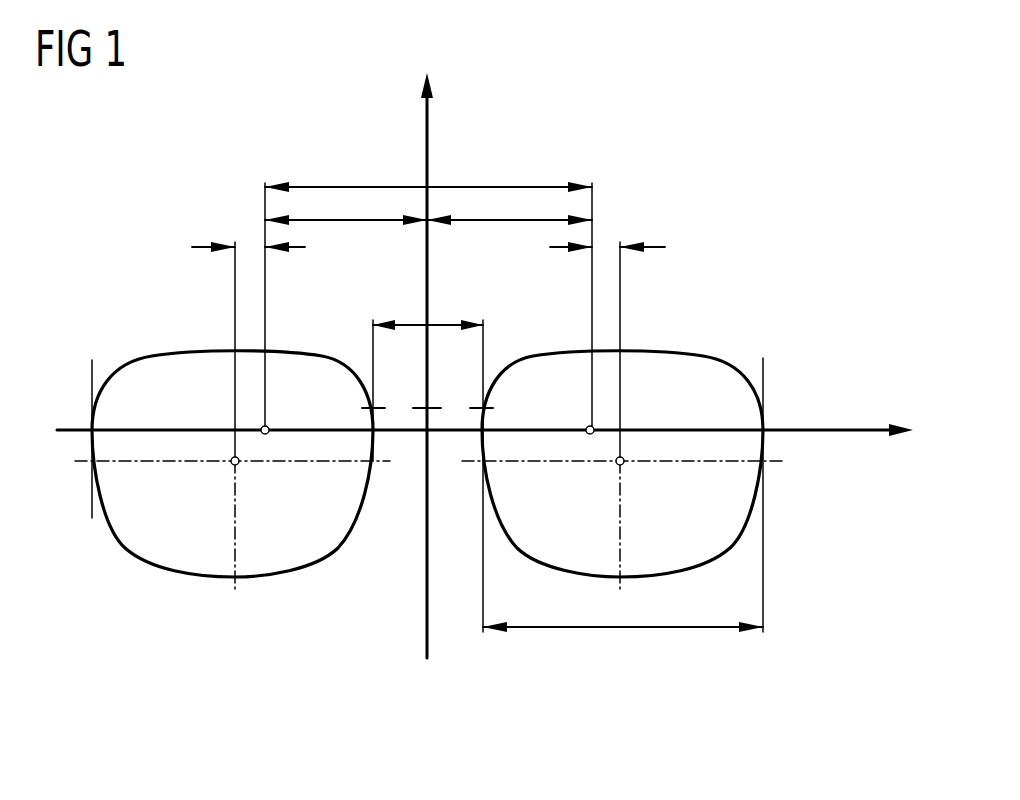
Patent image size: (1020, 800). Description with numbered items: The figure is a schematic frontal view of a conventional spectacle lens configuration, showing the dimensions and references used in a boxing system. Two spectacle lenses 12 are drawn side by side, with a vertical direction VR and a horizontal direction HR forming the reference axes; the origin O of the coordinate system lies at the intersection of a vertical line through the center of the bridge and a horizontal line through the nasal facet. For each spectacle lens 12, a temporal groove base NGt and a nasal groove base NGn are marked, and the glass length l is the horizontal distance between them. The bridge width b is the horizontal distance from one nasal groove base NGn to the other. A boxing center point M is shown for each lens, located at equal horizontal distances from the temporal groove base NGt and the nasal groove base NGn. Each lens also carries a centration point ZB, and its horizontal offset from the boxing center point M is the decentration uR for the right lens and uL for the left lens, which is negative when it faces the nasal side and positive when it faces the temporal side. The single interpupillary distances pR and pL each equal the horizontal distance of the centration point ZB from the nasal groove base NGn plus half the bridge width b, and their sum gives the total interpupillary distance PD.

The spectacle lens 12 is at (145, 373).
The vertical direction VR is at (430, 118).
The horizontal direction HR is at (865, 433).
The interpupillary distance PD is at (352, 182).
The single interpupillary distance pR is at (340, 222).
The single interpupillary distance pL is at (497, 222).
The decentration uR is at (250, 252).
The decentration uL is at (605, 254).
The bridge width b is at (412, 322).
The nasal groove base NGn is at (378, 406).
The temporal groove base NGt is at (812, 410).
The centration point ZB is at (590, 425).
The boxing center point M is at (238, 466).
The origin O is at (420, 410).
The glass length l is at (610, 630).